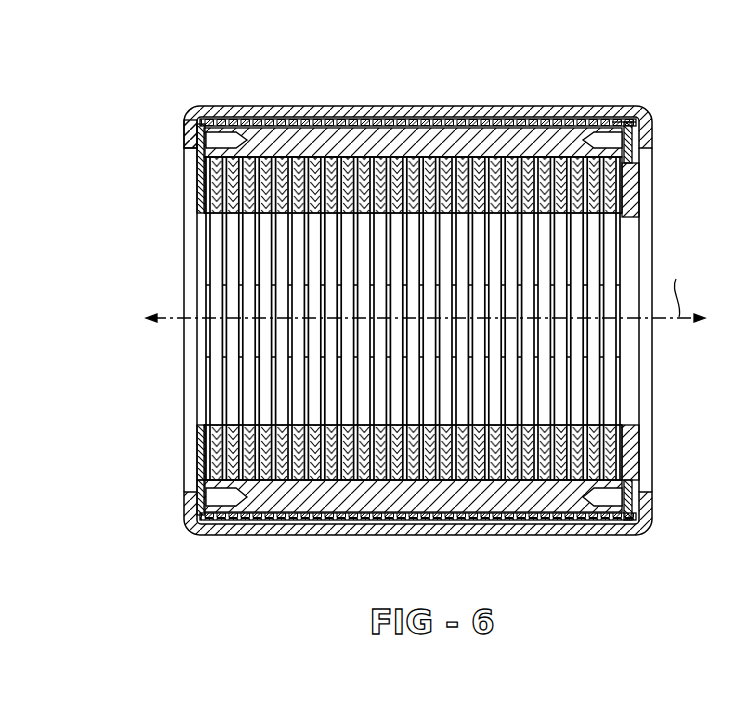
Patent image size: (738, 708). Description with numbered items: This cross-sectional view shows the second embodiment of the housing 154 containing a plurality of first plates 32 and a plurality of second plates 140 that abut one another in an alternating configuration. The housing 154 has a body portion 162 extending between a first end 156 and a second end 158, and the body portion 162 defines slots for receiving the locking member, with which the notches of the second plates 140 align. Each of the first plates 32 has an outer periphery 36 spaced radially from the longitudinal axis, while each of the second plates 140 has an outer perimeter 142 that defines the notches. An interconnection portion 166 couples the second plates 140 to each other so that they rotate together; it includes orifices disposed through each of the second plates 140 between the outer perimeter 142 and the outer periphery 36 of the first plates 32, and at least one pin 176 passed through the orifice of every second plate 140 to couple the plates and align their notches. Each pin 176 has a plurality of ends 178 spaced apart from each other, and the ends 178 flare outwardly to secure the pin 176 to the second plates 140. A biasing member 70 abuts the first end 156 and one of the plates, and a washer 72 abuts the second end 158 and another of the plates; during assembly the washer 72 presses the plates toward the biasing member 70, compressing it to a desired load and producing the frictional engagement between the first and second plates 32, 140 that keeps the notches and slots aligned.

The housing 154 is at (212, 106).
The first end 156 is at (185, 137).
The second end 158 is at (647, 508).
The body portion 162 is at (618, 106).
The interconnection portion 166 is at (665, 100).
The outer perimeter 142 is at (340, 119).
The pin 176 is at (257, 133).
The ends 178 is at (197, 121).
The outer periphery 36 is at (486, 163).
The first plates 32 is at (534, 173).
The second plates 140 is at (572, 163).
The washer 72 is at (639, 168).
The biasing member 70 is at (199, 452).